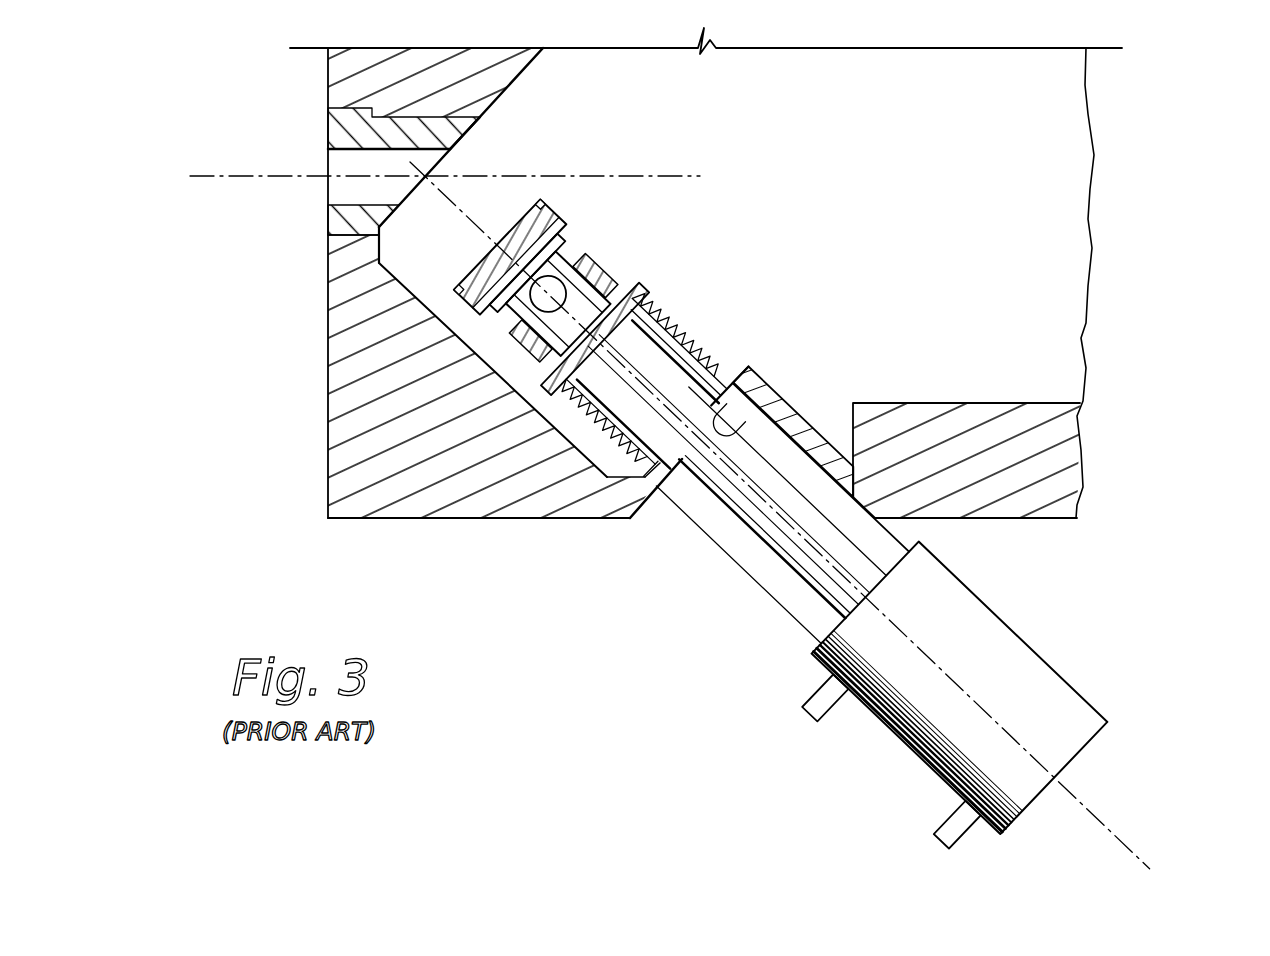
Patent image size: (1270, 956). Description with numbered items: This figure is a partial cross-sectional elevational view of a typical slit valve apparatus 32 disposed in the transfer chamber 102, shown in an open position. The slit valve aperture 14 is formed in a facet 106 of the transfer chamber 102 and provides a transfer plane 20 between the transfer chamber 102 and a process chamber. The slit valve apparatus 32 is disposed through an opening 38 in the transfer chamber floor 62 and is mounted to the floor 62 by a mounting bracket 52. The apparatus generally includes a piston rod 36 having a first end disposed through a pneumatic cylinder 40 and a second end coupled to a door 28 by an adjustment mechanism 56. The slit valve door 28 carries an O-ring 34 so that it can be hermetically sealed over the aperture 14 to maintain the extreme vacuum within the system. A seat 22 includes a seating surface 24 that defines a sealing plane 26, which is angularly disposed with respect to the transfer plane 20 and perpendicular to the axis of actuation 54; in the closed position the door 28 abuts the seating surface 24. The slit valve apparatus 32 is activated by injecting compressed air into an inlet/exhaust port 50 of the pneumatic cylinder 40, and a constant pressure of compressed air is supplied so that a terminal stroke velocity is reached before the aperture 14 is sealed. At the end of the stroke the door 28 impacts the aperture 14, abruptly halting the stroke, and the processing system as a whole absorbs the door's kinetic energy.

The slit valve aperture 14 is at (340, 191).
The transfer plane 20 is at (214, 176).
The seat 22 is at (330, 124).
The seating surface 24 is at (472, 132).
The sealing plane 26 is at (537, 70).
The door 28 is at (556, 221).
The slit valve apparatus 32 is at (736, 617).
The O-ring 34 is at (462, 285).
The piston rod 36 is at (748, 510).
The opening 38 is at (722, 430).
The pneumatic cylinder 40 is at (1033, 648).
The inlet/exhaust port 50 is at (812, 695).
The mounting bracket 52 is at (728, 368).
The axis of actuation 54 is at (1128, 846).
The adjustment mechanism 56 is at (566, 266).
The floor 62 is at (940, 402).
The transfer chamber 102 is at (1130, 108).
The facet 106 is at (326, 441).